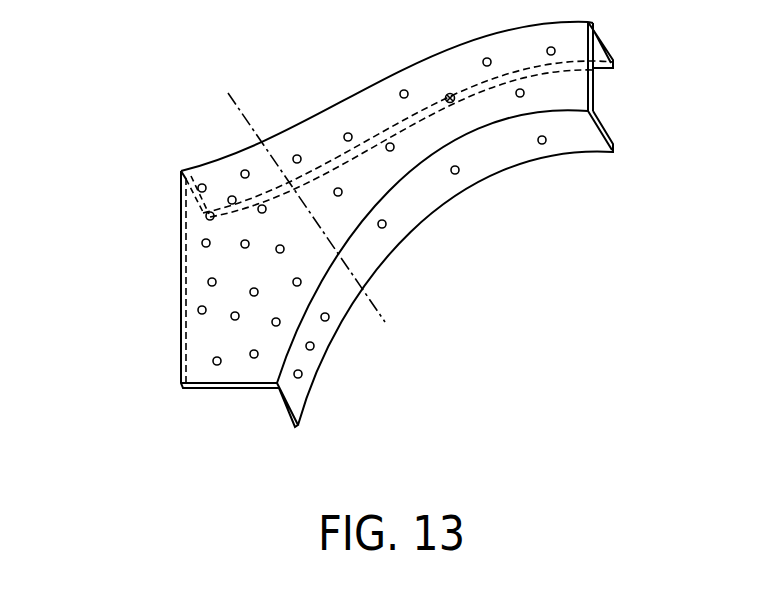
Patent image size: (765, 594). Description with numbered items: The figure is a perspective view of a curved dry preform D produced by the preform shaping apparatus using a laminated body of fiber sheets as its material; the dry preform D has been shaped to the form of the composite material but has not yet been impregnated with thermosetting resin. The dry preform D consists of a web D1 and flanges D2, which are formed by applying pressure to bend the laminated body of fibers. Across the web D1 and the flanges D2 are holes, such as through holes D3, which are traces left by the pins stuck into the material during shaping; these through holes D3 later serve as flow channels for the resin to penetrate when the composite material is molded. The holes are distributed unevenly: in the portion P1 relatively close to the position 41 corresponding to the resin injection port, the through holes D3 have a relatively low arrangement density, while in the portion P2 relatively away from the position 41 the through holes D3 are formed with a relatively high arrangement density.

The position corresponding to the injection port of the resin 41 is at (448, 96).
The dry preform D is at (329, 221).
The web D1 is at (197, 292).
The flanges D2 is at (428, 195).
The through holes D3 is at (315, 348).
The portion relatively close to the position corresponding to the injection port P1 is at (221, 123).
The portion relatively away from the position corresponding to the injection port P2 is at (198, 138).